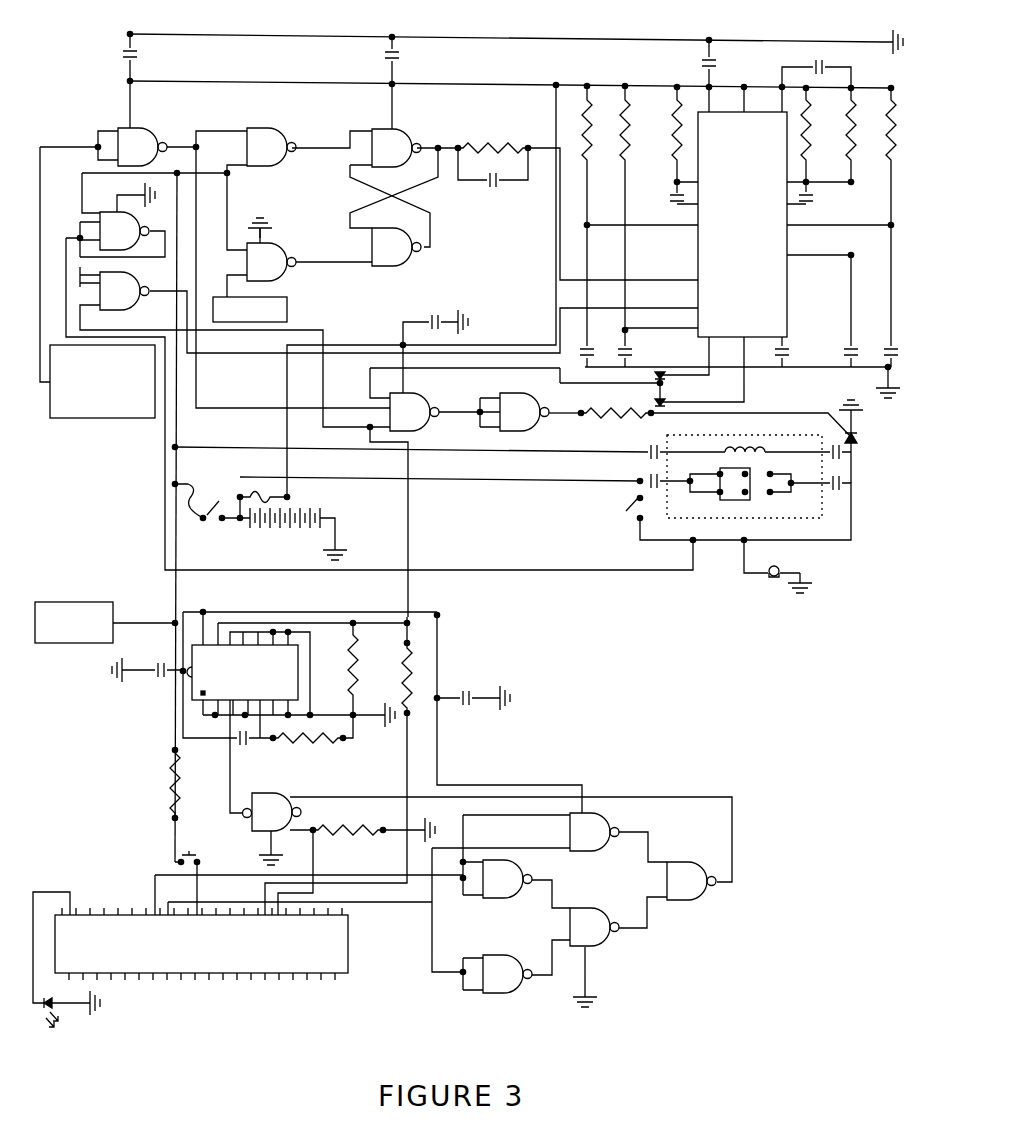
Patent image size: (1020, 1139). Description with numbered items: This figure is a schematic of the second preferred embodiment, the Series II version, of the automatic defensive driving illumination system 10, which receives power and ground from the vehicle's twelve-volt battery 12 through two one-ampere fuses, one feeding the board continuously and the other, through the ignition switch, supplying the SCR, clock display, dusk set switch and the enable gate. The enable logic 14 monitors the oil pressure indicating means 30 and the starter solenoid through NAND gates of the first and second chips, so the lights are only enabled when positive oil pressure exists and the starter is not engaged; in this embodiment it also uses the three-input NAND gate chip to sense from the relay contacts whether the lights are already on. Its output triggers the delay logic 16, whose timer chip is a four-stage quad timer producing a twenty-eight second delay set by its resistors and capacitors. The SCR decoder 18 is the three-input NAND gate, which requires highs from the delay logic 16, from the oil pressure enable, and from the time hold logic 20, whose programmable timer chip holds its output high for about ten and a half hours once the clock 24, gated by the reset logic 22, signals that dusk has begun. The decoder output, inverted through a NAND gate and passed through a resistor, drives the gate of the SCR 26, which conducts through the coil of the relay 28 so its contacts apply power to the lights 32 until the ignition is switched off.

The automatic defensive driving illumination system 10 is at (513, 48).
The battery 12 is at (259, 520).
The enable logic 14 is at (369, 471).
The delay logic 16 is at (640, 229).
The silicon controlled rectifier (SCR) decoder 18 is at (609, 492).
The time hold logic 20 is at (383, 758).
The reset logic 22 is at (581, 903).
The clock 24 is at (248, 939).
The silicon controlled rectifier (SCR) 26 is at (862, 441).
The relay 28 is at (511, 489).
The oil pressure indicating means 30 is at (102, 395).
The lights 32 is at (791, 571).